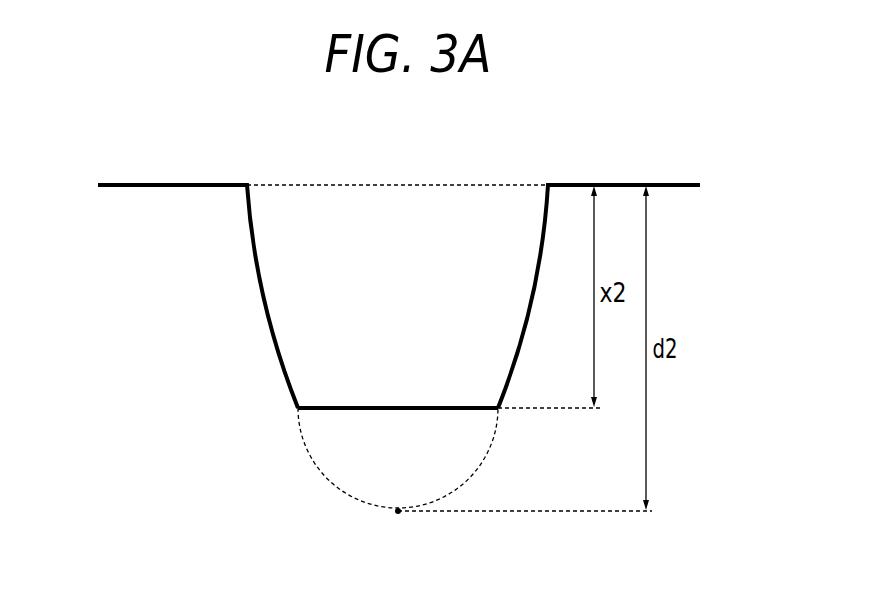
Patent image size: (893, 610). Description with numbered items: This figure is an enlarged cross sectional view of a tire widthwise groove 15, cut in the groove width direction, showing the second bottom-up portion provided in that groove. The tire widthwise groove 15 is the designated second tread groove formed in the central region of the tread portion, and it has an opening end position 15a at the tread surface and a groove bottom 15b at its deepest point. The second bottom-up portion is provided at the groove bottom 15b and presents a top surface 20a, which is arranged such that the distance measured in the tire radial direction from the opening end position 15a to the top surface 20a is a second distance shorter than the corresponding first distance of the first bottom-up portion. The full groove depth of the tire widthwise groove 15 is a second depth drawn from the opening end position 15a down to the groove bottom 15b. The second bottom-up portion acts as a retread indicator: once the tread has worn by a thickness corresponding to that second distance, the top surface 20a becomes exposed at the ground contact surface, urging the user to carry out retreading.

The tire widthwise groove 15 is at (452, 252).
The opening end position 15a is at (318, 185).
The groove bottom 15b is at (398, 515).
The top surface 20a is at (399, 407).